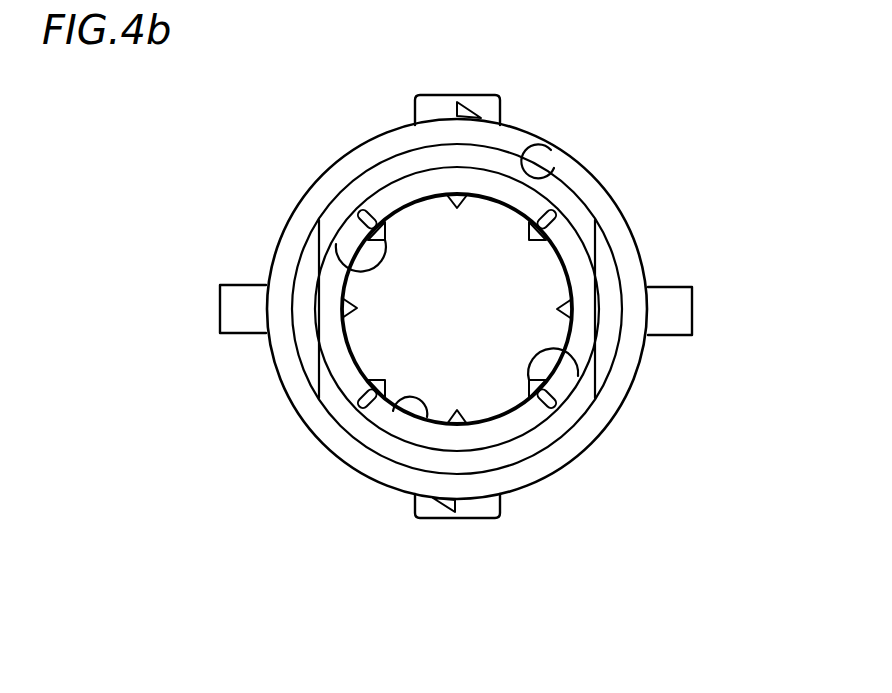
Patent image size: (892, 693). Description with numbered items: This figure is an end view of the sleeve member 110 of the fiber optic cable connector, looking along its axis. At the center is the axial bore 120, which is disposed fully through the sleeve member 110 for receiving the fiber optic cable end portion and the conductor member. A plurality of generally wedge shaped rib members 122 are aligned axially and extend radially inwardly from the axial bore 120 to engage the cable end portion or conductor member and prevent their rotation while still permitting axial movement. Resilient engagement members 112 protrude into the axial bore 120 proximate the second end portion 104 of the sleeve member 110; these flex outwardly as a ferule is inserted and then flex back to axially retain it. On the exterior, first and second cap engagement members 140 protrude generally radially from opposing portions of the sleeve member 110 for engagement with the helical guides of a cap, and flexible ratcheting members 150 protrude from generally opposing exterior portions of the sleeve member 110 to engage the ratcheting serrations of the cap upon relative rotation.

The second end portion 104 is at (613, 436).
The sleeve member 110 is at (648, 190).
The resilient engagement members 112 is at (605, 278).
The axial bore 120 is at (552, 142).
The wedge shaped rib members 122 is at (338, 250).
The cap engagement members 140 is at (427, 95).
The flexible ratcheting members 150 is at (472, 95).